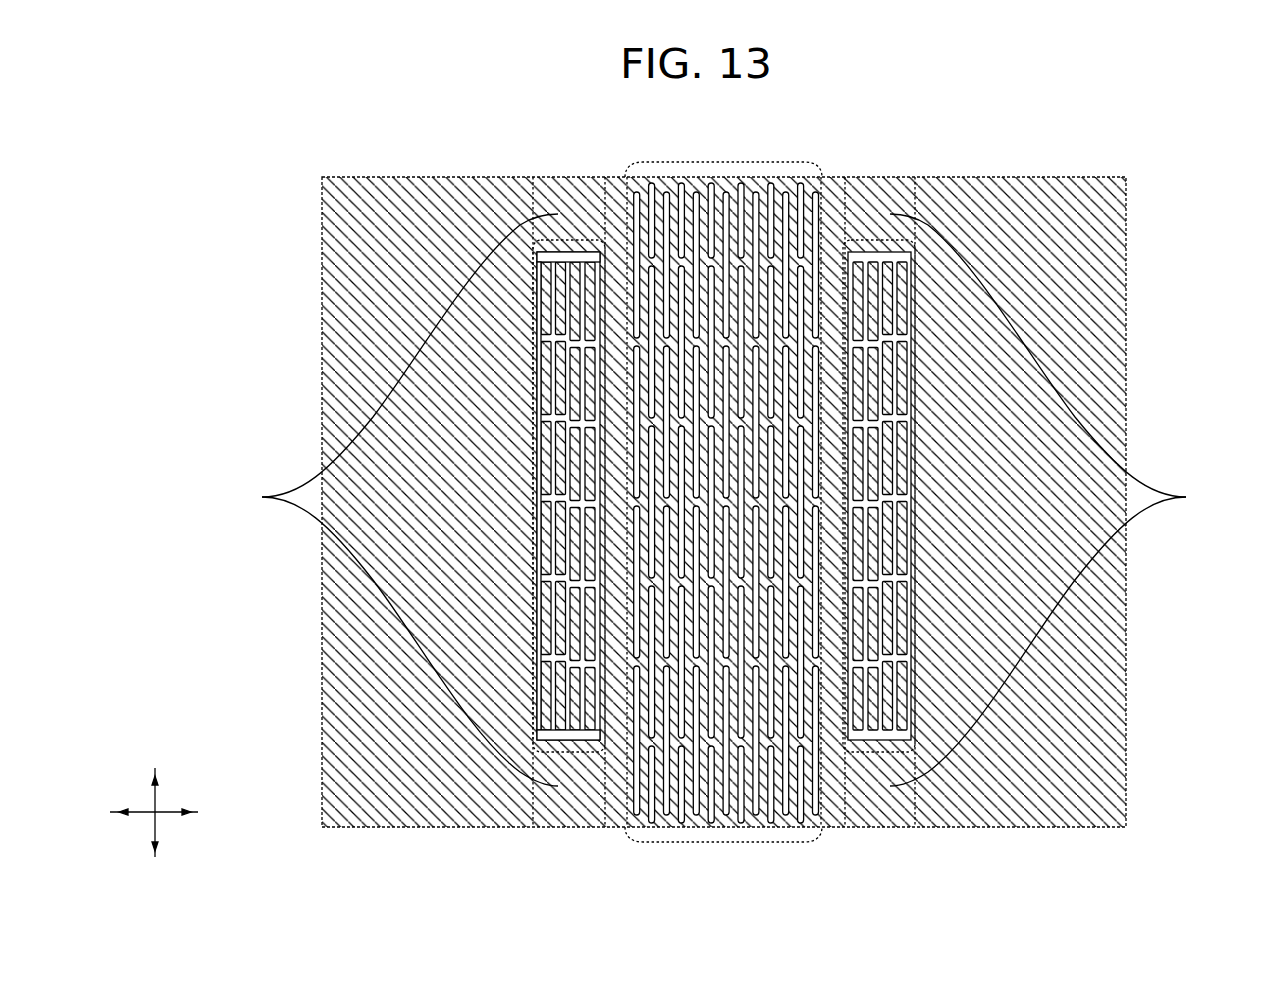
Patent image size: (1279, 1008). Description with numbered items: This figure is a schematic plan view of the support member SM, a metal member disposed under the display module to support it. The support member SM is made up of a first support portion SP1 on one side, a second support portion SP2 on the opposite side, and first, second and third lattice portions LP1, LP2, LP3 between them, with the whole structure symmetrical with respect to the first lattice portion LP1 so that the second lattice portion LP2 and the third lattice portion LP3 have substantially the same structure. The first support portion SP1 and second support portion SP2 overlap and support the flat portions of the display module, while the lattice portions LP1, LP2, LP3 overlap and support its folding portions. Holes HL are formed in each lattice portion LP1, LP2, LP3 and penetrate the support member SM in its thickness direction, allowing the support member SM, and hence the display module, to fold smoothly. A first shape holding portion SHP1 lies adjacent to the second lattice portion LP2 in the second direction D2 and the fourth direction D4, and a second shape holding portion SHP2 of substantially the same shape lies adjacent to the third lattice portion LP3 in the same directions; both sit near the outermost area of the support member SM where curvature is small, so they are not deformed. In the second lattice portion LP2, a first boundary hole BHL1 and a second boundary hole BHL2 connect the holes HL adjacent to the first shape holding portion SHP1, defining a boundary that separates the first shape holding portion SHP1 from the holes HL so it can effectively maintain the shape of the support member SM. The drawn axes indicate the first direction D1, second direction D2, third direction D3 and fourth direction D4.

The support member SM is at (1178, 182).
The first support portion SP1 is at (408, 215).
The second support portion SP2 is at (1020, 215).
The first lattice portion LP1 is at (722, 160).
The second lattice portion LP2 is at (567, 240).
The third lattice portion LP3 is at (867, 242).
The first boundary hole BHL1 is at (537, 260).
The second boundary hole BHL2 is at (537, 742).
The holes HL is at (537, 417).
The first shape holding portion SHP1 is at (381, 500).
The second shape holding portion SHP2 is at (1186, 497).
The first direction D1 is at (191, 814).
The second direction D2 is at (155, 776).
The third direction D3 is at (118, 814).
The fourth direction D4 is at (155, 850).